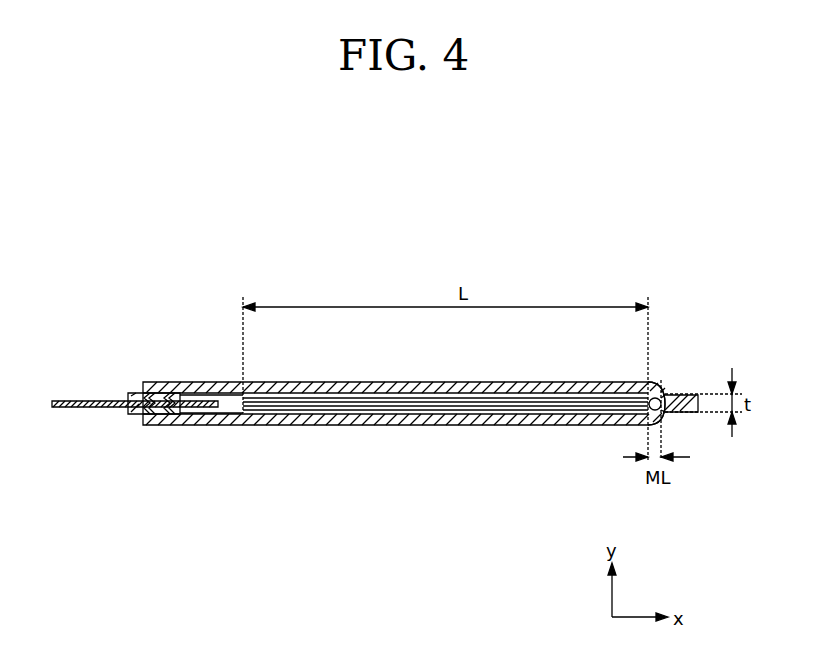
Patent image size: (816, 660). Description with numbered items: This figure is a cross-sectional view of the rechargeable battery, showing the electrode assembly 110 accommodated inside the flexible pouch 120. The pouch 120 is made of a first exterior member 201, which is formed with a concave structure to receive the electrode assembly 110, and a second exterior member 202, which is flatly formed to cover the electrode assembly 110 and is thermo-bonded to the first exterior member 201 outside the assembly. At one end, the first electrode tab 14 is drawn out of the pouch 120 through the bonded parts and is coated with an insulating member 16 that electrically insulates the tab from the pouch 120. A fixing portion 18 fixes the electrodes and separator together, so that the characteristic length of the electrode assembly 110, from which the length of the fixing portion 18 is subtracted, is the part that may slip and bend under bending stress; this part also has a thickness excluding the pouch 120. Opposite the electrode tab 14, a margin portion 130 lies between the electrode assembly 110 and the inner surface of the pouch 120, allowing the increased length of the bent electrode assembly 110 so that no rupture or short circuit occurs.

The first electrode tab 14 is at (72, 408).
The insulating member 16 is at (131, 416).
The fixing portion 18 is at (222, 414).
The electrode assembly 110 is at (513, 405).
The pouch 120 is at (404, 470).
The first exterior member 201 is at (441, 520).
The second exterior member 202 is at (427, 388).
The margin portion 130 is at (656, 390).